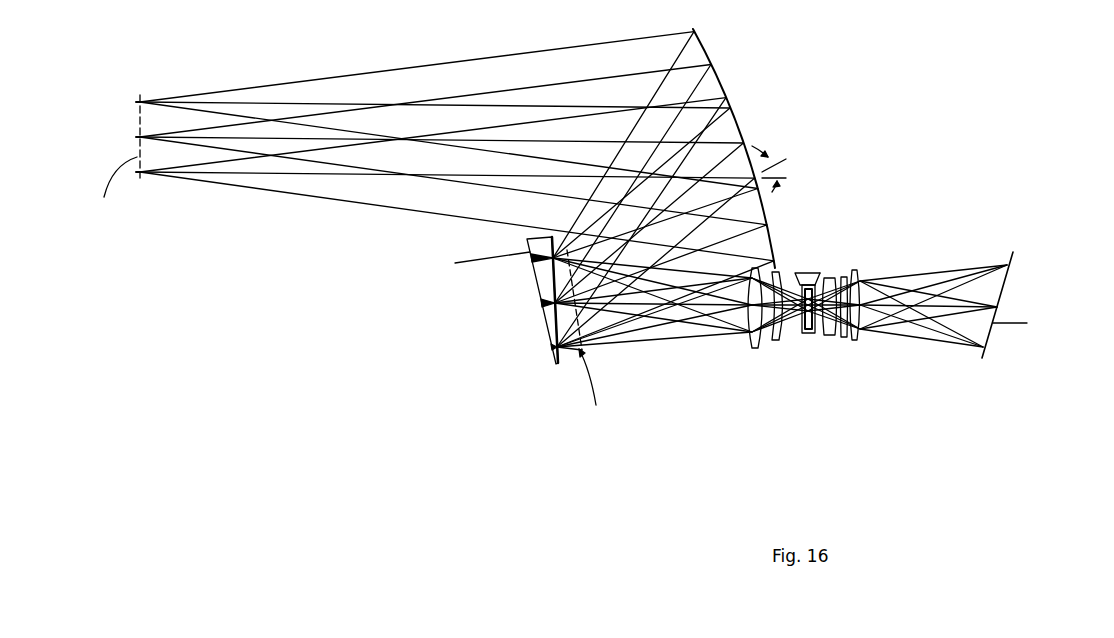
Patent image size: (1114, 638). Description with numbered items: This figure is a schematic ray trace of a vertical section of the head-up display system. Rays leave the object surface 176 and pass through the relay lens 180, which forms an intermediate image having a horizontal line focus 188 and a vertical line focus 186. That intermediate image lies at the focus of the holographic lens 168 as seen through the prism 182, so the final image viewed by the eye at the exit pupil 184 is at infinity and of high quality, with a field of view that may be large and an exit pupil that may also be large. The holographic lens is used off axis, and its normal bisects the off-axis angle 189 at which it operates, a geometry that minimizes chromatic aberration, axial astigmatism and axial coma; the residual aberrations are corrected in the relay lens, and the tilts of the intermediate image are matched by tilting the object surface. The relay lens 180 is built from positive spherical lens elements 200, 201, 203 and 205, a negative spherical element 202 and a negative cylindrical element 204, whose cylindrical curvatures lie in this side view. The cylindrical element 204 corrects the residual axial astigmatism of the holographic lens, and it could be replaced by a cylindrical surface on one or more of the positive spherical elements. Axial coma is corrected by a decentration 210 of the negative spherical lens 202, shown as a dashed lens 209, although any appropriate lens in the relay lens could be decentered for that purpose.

The holographic lens 168 is at (737, 117).
The object surface 176 is at (1012, 265).
The relay lens 180 is at (826, 227).
The prism 182 is at (537, 287).
The exit pupil 184 is at (138, 121).
The vertical line focus 186 is at (586, 351).
The horizontal line focus 188 is at (573, 353).
The off-axis angle 189 is at (786, 159).
The positive spherical lens element 200 is at (753, 345).
The positive spherical lens element 201 is at (781, 338).
The negative spherical element 202 is at (817, 275).
The positive spherical lens element 203 is at (831, 338).
The negative cylindrical element 204 is at (847, 338).
The positive spherical lens element 205 is at (856, 276).
The dashed lens 209 is at (808, 271).
The decentration 210 is at (806, 337).